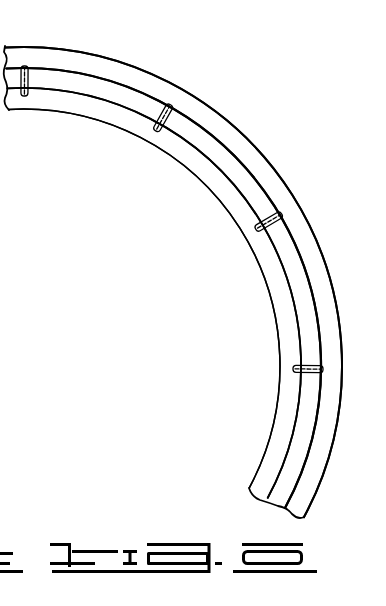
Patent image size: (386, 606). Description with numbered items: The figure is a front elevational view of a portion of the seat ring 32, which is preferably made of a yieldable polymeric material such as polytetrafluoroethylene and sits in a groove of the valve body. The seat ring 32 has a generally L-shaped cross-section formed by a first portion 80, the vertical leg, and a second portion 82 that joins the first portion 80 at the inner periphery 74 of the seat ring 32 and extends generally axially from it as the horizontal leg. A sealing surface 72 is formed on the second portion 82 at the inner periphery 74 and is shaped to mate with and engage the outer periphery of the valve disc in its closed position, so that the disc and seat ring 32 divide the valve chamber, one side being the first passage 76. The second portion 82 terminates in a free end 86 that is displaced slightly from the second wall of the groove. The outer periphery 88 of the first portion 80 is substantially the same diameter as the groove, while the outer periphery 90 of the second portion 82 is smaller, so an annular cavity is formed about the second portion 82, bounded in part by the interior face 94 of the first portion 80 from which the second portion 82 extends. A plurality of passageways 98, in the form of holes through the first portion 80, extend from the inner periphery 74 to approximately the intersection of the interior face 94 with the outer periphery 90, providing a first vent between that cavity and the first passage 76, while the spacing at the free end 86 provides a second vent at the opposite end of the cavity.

The seat ring 32 is at (190, 232).
The sealing surface 72 is at (247, 221).
The inner periphery 74 is at (178, 168).
The first passage 76 is at (5, 64).
The first portion 80 is at (118, 70).
The second portion 82 is at (66, 82).
The free end 86 is at (217, 157).
The outer periphery of the first portion 88 is at (165, 79).
The outer periphery of the second portion 90 is at (203, 128).
The interior face 94 is at (223, 133).
The passageways 98 is at (20, 80).